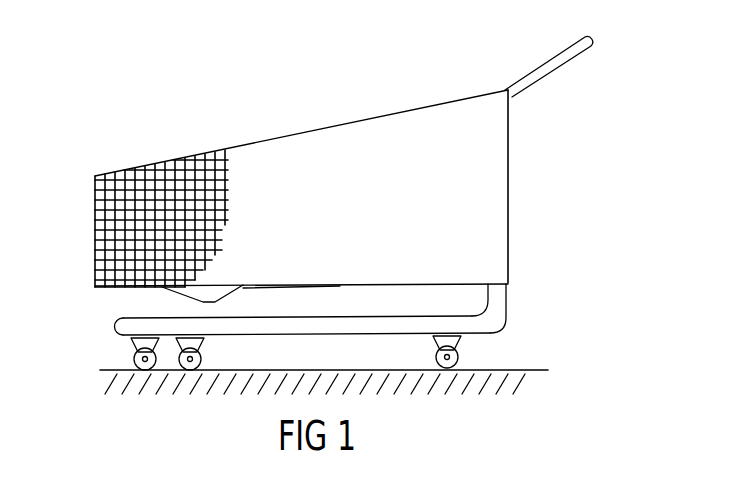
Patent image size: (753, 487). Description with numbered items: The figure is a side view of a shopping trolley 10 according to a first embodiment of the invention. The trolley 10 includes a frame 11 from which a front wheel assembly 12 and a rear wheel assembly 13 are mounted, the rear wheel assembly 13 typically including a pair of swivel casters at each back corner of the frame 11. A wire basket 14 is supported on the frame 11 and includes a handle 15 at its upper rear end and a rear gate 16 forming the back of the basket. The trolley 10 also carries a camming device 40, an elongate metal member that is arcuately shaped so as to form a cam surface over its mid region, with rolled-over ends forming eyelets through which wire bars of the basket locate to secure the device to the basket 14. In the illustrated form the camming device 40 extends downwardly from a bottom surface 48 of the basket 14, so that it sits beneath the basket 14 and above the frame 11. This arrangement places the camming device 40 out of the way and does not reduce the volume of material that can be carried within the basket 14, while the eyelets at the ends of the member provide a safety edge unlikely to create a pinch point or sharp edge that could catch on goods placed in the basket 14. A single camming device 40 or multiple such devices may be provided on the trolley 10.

The shopping trolley 10 is at (540, 133).
The frame 11 is at (496, 302).
The front wheel assembly 12 is at (130, 366).
The rear wheel assembly 13 is at (457, 371).
The wire basket 14 is at (488, 210).
The handle 15 is at (556, 54).
The rear gate 16 is at (510, 176).
The camming device 40 is at (165, 299).
The bottom surface 48 is at (388, 290).